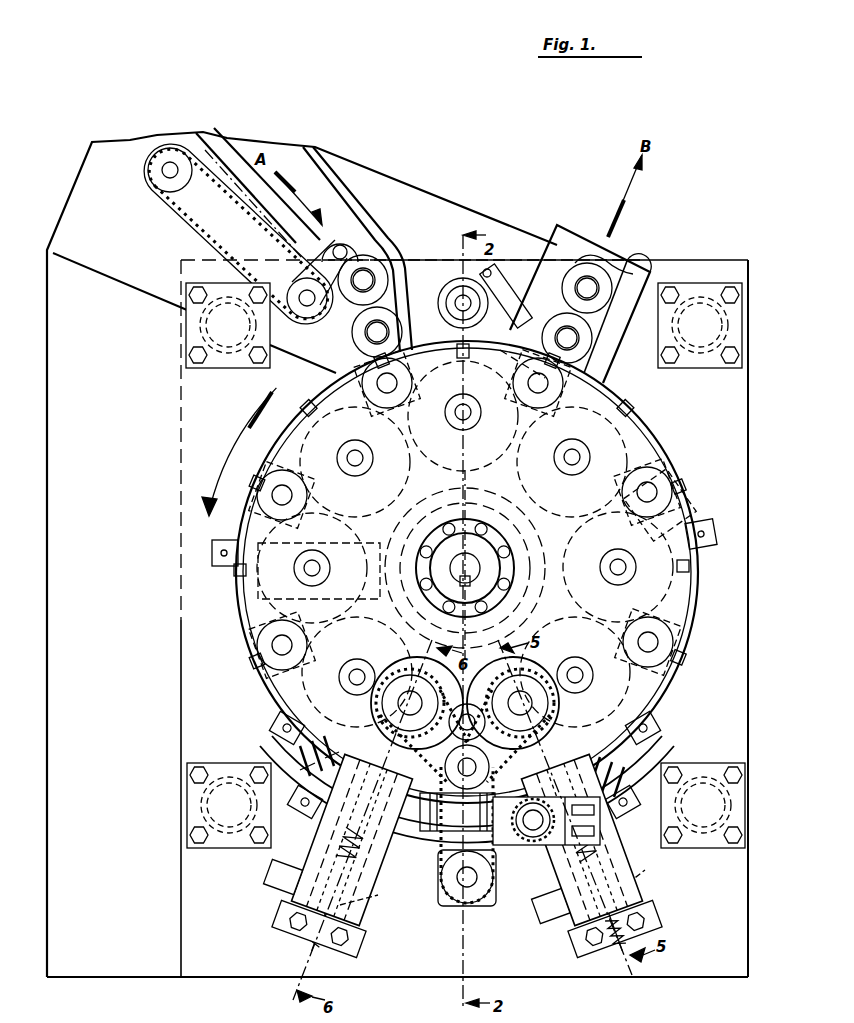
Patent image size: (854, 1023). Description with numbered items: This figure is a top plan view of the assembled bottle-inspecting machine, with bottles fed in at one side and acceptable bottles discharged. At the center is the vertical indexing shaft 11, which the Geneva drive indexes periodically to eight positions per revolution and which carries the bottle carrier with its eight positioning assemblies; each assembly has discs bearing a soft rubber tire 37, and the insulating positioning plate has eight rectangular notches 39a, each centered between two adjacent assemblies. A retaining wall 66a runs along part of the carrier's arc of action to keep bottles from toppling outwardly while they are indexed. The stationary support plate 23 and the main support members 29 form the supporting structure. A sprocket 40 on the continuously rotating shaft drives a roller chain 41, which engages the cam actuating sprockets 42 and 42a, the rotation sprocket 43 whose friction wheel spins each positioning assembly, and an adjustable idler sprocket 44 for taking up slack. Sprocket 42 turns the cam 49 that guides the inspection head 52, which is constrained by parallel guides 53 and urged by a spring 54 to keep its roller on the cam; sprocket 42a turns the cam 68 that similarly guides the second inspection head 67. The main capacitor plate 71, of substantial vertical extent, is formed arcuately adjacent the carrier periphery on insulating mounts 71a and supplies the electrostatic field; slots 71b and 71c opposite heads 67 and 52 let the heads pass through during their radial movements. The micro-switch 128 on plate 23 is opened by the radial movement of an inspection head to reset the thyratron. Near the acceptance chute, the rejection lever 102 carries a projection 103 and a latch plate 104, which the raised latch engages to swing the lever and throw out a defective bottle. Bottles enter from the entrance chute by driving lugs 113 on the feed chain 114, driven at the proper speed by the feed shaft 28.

The indexing shaft 11 is at (472, 578).
The stationary support plate 23 is at (232, 977).
The feed shaft 28 is at (300, 285).
The main support members 29 is at (206, 330).
The rubber tire 37 is at (465, 550).
The rectangular notches 39a is at (310, 494).
The sprocket 40 is at (470, 903).
The roller chain 41 is at (442, 870).
The cam actuating sprocket 42 is at (555, 710).
The cam actuating sprocket 42a is at (382, 712).
The rotation sprocket 43 is at (465, 760).
The adjustable idler sprocket 44 is at (533, 845).
The cam 49 is at (520, 665).
The inspection head 52 is at (565, 877).
The parallel guides 53 is at (505, 883).
The spring 54 is at (358, 927).
The retaining wall 66a is at (240, 617).
The second inspection head 67 is at (318, 838).
The cam 68 is at (430, 665).
The main capacitor plate 71 is at (318, 753).
The insulating mounts 71a is at (302, 755).
The slot 71b is at (333, 755).
The slot 71c is at (607, 760).
The rejection lever 102 is at (636, 452).
The projection 103 is at (462, 276).
The latch plate 104 is at (490, 270).
The driving lugs 113 is at (332, 258).
The feed chain 114 is at (186, 212).
The micro-switch 128 is at (270, 875).